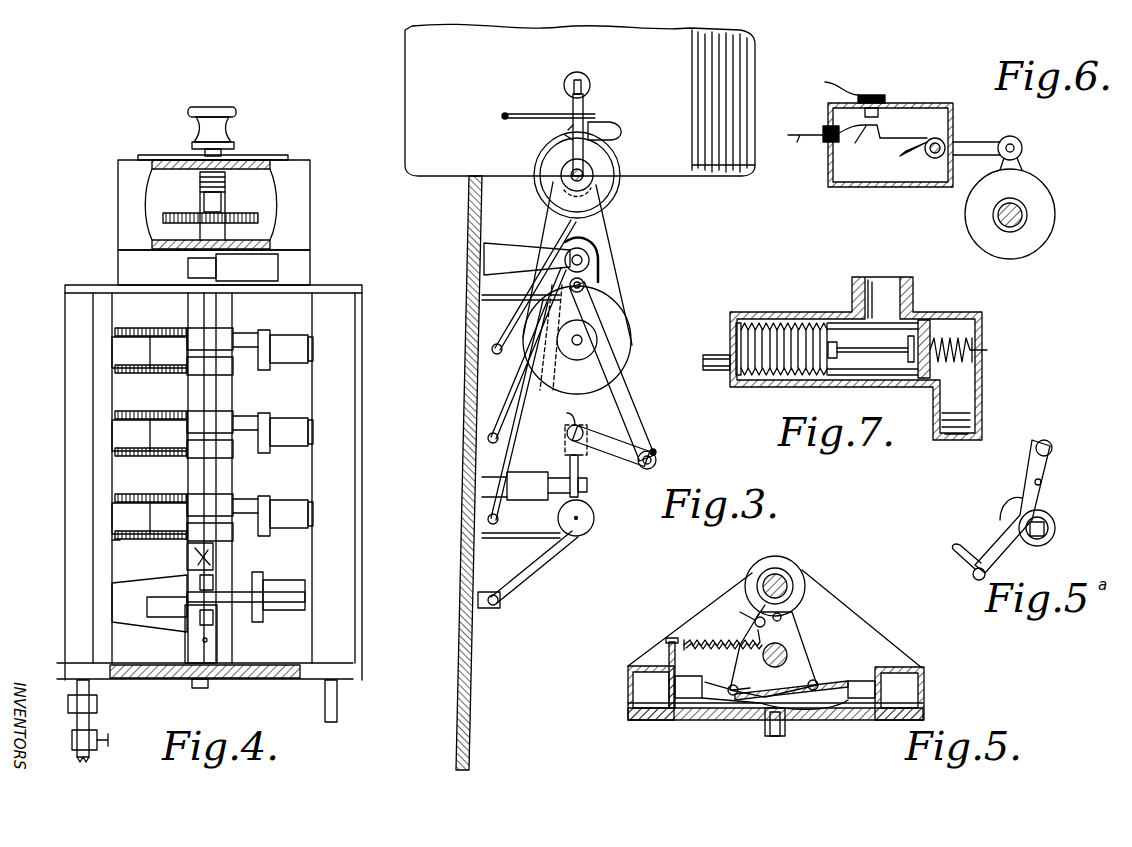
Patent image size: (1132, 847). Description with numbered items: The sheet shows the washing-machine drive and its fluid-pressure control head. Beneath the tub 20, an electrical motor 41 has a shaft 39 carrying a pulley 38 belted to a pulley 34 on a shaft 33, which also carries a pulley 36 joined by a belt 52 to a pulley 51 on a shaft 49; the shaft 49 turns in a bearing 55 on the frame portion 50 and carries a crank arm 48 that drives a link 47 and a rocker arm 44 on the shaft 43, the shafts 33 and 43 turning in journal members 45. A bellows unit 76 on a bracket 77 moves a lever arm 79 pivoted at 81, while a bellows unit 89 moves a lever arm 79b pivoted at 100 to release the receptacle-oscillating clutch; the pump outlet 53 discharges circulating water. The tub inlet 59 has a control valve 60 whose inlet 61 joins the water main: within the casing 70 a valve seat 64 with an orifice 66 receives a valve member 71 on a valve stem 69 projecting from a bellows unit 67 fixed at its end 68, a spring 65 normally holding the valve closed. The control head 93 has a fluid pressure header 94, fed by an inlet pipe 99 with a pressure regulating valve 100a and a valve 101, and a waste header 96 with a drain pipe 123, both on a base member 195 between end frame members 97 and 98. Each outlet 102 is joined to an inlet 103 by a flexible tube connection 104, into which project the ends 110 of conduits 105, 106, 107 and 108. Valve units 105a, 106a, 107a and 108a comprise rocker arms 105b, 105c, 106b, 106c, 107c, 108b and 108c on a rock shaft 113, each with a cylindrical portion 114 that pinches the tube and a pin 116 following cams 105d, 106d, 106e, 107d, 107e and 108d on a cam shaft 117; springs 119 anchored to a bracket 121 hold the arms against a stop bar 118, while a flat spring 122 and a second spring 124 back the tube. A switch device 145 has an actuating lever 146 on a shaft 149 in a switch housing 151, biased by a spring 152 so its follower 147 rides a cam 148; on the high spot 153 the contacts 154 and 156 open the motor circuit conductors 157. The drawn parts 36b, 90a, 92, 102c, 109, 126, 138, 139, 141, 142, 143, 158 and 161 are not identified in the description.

In FIG. 3, the tub 20 is at (405, 103).
In FIG. 3, the shaft 33 is at (575, 350).
In FIG. 3, the pulley 34 is at (620, 332).
In FIG. 3, the pulley 36 is at (608, 220).
In FIG. 3, the belt portion 36b is at (565, 340).
In FIG. 3, the pulley 38 is at (588, 173).
In FIG. 3, the shaft 39 is at (566, 172).
In FIG. 3, the electrical motor 41 is at (548, 182).
In FIG. 3, the shaft 43 is at (567, 413).
In FIG. 3, the rocker arm 44 is at (658, 452).
In FIG. 3, the journal members 45 is at (602, 388).
In FIG. 3, the link 47 is at (636, 455).
In FIG. 3, the crank arm 48 is at (586, 283).
In FIG. 3, the shaft 49 is at (597, 262).
In FIG. 3, the frame portion 50 is at (472, 655).
In FIG. 3, the pulley 51 is at (592, 252).
In FIG. 3, the belt 52 is at (560, 258).
In FIG. 3, the outlet 53 is at (622, 131).
In FIG. 3, the bearing 55 is at (520, 252).
In FIG. 7, the inlet 59 is at (905, 288).
In FIG. 7, the control valve 60 is at (955, 315).
In FIG. 7, the inlet 61 is at (982, 410).
In FIG. 7, the valve seat 64 is at (895, 385).
In FIG. 7, the spring 65 is at (975, 340).
In FIG. 7, the orifice 66 is at (908, 350).
In FIG. 7, the bellows unit 67 is at (790, 328).
In FIG. 7, the end 68 is at (745, 325).
In FIG. 7, the valve stem 69 is at (875, 348).
In FIG. 7, the casing 70 is at (840, 387).
In FIG. 7, the valve member 71 is at (924, 320).
In FIG. 3, the bellows unit 76 is at (590, 82).
In FIG. 3, the bracket 77 is at (573, 105).
In FIG. 3, the lever arm 79 is at (583, 108).
In FIG. 3, the lever arm 79b is at (590, 494).
In FIG. 3, the pivot 81 is at (565, 128).
In FIG. 3, the bellows unit 89 is at (594, 520).
In FIG. 4, the housing base 90a is at (125, 262).
In FIG. 4, the frame 92 is at (366, 421).
In FIG. 4, the control head 93 is at (307, 156).
In FIG. 4, the fluid pressure header 94 is at (65, 608).
In FIG. 5, the fluid pressure header 94 is at (634, 690).
In FIG. 5, the waste header 96 is at (924, 670).
In FIG. 4, the end frame member 97 is at (340, 290).
In FIG. 5, the end frame member 97 is at (885, 648).
In FIG. 4, the end frame member 98 is at (292, 680).
In FIG. 4, the inlet pipe 99 is at (77, 690).
In FIG. 3, the pivot 100 is at (587, 480).
In FIG. 4, the pressure regulating valve 100a is at (97, 705).
In FIG. 4, the valve 101 is at (72, 738).
In FIG. 4, the outlets 102 is at (130, 430).
In FIG. 5, the outlets 102 is at (688, 676).
In FIG. 4, the block 102c is at (210, 446).
In FIG. 4, the inlets 103 is at (306, 430).
In FIG. 5, the inlets 103 is at (860, 681).
In FIG. 4, the flexible tube connection 104 is at (300, 410).
In FIG. 5, the flexible tube connection 104 is at (850, 708).
In FIG. 3, the conduit 105 is at (493, 436).
In FIG. 4, the valve unit 105a is at (239, 401).
In FIG. 4, the rocker arm 105b is at (156, 460).
In FIG. 4, the rocker arm 105c is at (250, 423).
In FIG. 4, the cam 105d is at (210, 420).
In FIG. 3, the conduit 106 is at (497, 345).
In FIG. 4, the valve unit 106a is at (239, 318).
In FIG. 4, the rocker arm 106b is at (148, 352).
In FIG. 4, the rocker arm 106c is at (250, 340).
In FIG. 4, the cam 106d is at (210, 337).
In FIG. 4, the cam 106e is at (210, 363).
In FIG. 3, the conduit 107 is at (507, 488).
In FIG. 4, the valve unit 107a is at (239, 484).
In FIG. 4, the rocker arm 107c is at (250, 506).
In FIG. 4, the cam 107d is at (210, 503).
In FIG. 4, the cam 107e is at (210, 529).
In FIG. 3, the conduit 108 is at (546, 566).
In FIG. 5, the conduit 108 is at (775, 736).
In FIG. 4, the valve unit 108a is at (228, 627).
In FIG. 5, the valve unit 108a is at (873, 616).
In FIG. 4, the rocker arm 108b is at (165, 612).
In FIG. 5, the rocker arm 108b is at (728, 688).
In FIG. 5A, the rocker arm 108b is at (1048, 470).
In FIG. 4, the rocker arm 108c is at (258, 590).
In FIG. 5, the rocker arm 108c is at (798, 672).
In FIG. 5, the cam 108d is at (802, 575).
In FIG. 3, the rod 109 is at (518, 112).
In FIG. 5, the ends 110 is at (765, 725).
In FIG. 5, the rock shaft 113 is at (787, 653).
In FIG. 4, the cylindrical portion 114 is at (130, 545).
In FIG. 5, the cylindrical portion 114 is at (818, 683).
In FIG. 5A, the cylindrical portion 114 is at (985, 578).
In FIG. 4, the pin 116 is at (200, 582).
In FIG. 5A, the pin 116 is at (1052, 445).
In FIG. 4, the shaft 117 is at (225, 597).
In FIG. 5, the shaft 117 is at (765, 583).
In FIG. 6, the shaft 117 is at (1027, 216).
In FIG. 4, the stop bar 118 is at (190, 556).
In FIG. 5, the stop bar 118 is at (760, 612).
In FIG. 4, the springs 119 is at (122, 368).
In FIG. 5, the springs 119 is at (700, 640).
In FIG. 4, the bracket 121 is at (92, 470).
In FIG. 5, the bracket 121 is at (660, 655).
In FIG. 5, the flat spring 122 is at (740, 700).
In FIG. 4, the drain pipe 123 is at (337, 705).
In FIG. 5, the second spring 124 is at (825, 715).
In FIG. 4, the housing 126 is at (118, 222).
In FIG. 4, the gear 138 is at (240, 213).
In FIG. 4, the shaft 139 is at (221, 200).
In FIG. 4, the spring 141 is at (196, 178).
In FIG. 4, the knob 142 is at (236, 110).
In FIG. 4, the plate 143 is at (265, 152).
In FIG. 4, the switch device 145 is at (251, 254).
In FIG. 6, the switch device 145 is at (884, 197).
In FIG. 6, the actuating lever 146 is at (960, 143).
In FIG. 6, the follower 147 is at (1020, 140).
In FIG. 4, the cam 148 is at (188, 267).
In FIG. 6, the cam 148 is at (1035, 192).
In FIG. 6, the shaft 149 is at (930, 156).
In FIG. 4, the switch housing 151 is at (278, 266).
In FIG. 6, the switch housing 151 is at (855, 188).
In FIG. 6, the spring 152 is at (900, 161).
In FIG. 6, the high spot 153 is at (1016, 168).
In FIG. 6, the switch contact 154 is at (878, 115).
In FIG. 6, the switch contact 156 is at (883, 144).
In FIG. 6, the conductors 157 is at (860, 88).
In FIG. 4, the plate 158 is at (138, 157).
In FIG. 5, the pawl 161 is at (750, 606).
In FIG. 4, the base member 195 is at (262, 680).
In FIG. 5, the base member 195 is at (680, 718).